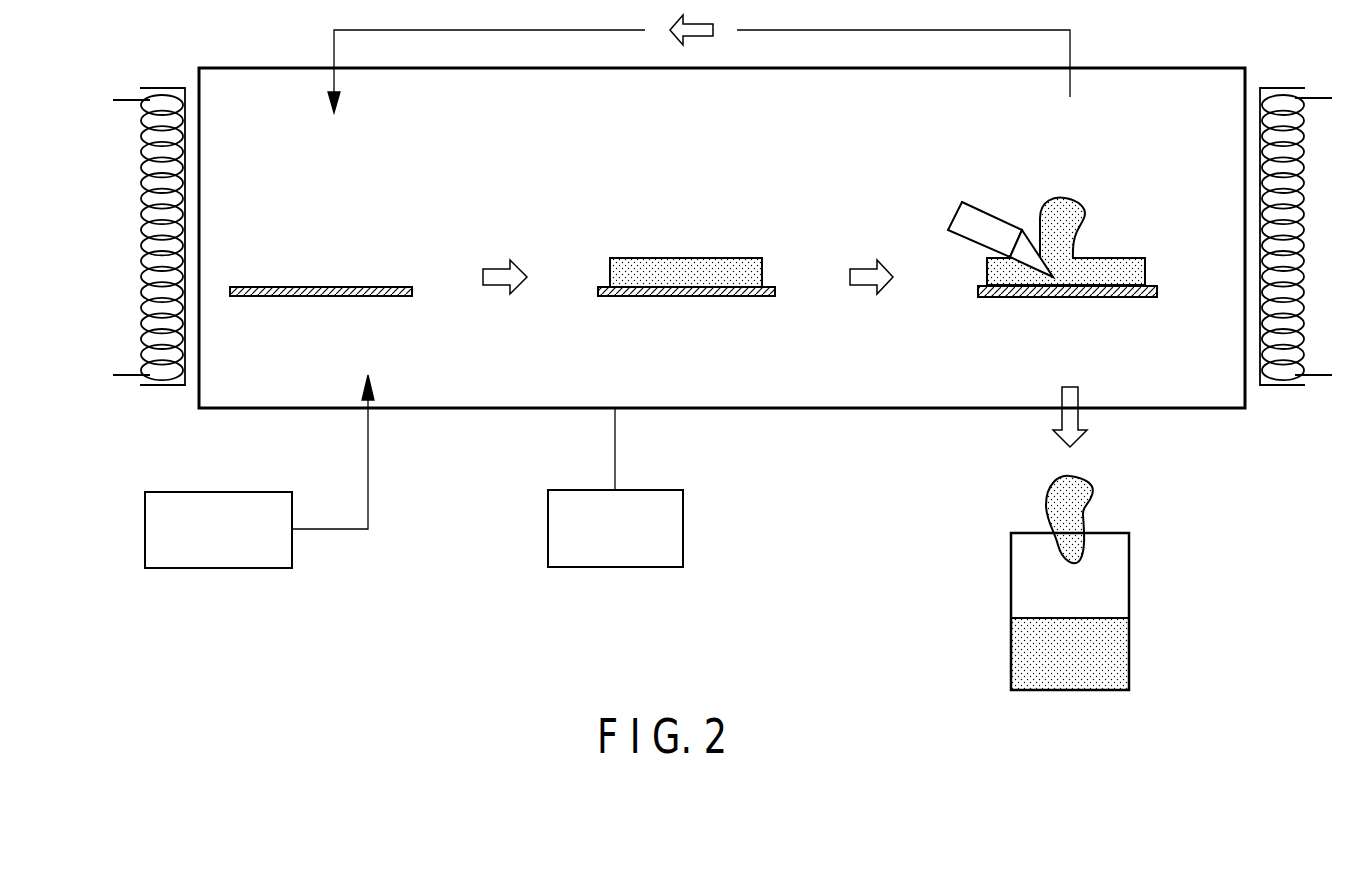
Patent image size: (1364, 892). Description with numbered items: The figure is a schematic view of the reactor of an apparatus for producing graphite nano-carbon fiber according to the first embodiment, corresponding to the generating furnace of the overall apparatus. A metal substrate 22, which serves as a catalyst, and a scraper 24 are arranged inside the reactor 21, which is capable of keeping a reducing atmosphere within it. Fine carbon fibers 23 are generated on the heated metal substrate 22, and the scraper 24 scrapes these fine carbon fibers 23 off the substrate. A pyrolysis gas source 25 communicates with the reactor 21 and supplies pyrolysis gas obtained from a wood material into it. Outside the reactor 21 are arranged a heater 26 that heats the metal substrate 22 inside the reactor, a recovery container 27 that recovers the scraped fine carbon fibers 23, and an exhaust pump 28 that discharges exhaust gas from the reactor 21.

The reactor 21 is at (482, 410).
The metal substrate 22 is at (298, 286).
The fine carbon fibers 23 is at (652, 257).
The scraper 24 is at (980, 220).
The pyrolysis gas source 25 is at (220, 570).
The heater 26 is at (140, 213).
The recovery container 27 is at (1130, 574).
The exhaust pump 28 is at (618, 570).